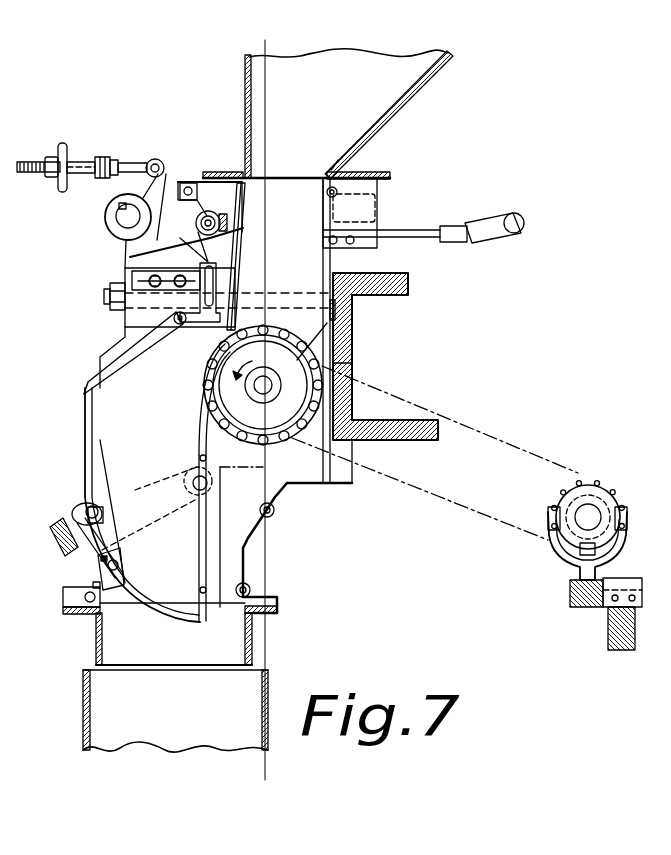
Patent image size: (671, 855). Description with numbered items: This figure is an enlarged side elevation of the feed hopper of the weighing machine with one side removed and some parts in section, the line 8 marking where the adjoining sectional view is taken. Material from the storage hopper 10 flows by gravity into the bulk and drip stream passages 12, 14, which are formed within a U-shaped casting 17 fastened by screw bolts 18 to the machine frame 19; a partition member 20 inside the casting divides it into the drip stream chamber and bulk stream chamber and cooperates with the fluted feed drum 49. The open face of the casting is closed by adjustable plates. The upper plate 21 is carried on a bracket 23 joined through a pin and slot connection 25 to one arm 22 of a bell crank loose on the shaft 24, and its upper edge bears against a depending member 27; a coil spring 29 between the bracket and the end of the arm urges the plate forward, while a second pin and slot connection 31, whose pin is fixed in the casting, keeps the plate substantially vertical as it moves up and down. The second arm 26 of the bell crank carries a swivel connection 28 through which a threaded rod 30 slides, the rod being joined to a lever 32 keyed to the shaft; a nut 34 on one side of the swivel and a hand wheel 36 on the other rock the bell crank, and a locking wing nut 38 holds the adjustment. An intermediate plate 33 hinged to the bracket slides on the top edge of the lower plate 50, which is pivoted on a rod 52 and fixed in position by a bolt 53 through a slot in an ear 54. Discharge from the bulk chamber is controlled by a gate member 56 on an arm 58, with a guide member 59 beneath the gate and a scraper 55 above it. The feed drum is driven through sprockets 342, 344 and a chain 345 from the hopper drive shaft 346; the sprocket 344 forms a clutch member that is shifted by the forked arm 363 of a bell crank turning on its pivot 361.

The section line 8— 8 is at (288, 46).
The storage hopper 10 is at (412, 96).
The bulk stream passage 12 is at (157, 483).
The drip stream passage 14 is at (263, 410).
The U-shaped casting 17 is at (107, 357).
The screw bolts 18 is at (110, 296).
The machine frame 19 is at (350, 328).
The partition member 20 is at (245, 538).
The upper plate 21 is at (237, 245).
The bell crank arm 22 is at (172, 250).
The bracket 23 is at (237, 258).
The shaft 24 is at (122, 220).
The pin and slot connection 25 is at (212, 208).
The second bell crank arm 26 is at (103, 180).
The depending member 27 is at (237, 213).
The swivel connection 28 is at (103, 157).
The coil spring 29 is at (247, 194).
The threaded rod 30 is at (158, 159).
The second pin and slot connection 31 is at (216, 270).
The lever 32 is at (172, 183).
The intermediate plate 33 is at (133, 360).
The nut 34 is at (116, 160).
The hand wheel 36 is at (62, 143).
The locking wing nut 38 is at (50, 160).
The fluted feed drum 49 is at (271, 330).
The lower plate 50 is at (97, 470).
The rod 52 is at (115, 562).
The bolt 53 is at (75, 506).
The ear 54 is at (67, 515).
The scraper 55 is at (113, 587).
The gate member 56 is at (165, 622).
The arm 58 is at (135, 490).
The guide member 59 is at (83, 577).
The sprocket 342 is at (352, 363).
The sprocket 344 is at (568, 473).
The chain 345 is at (420, 403).
The hopper drive shaft 346 is at (645, 475).
The bell crank pivot 361 is at (572, 584).
The forked arm 363 is at (575, 572).